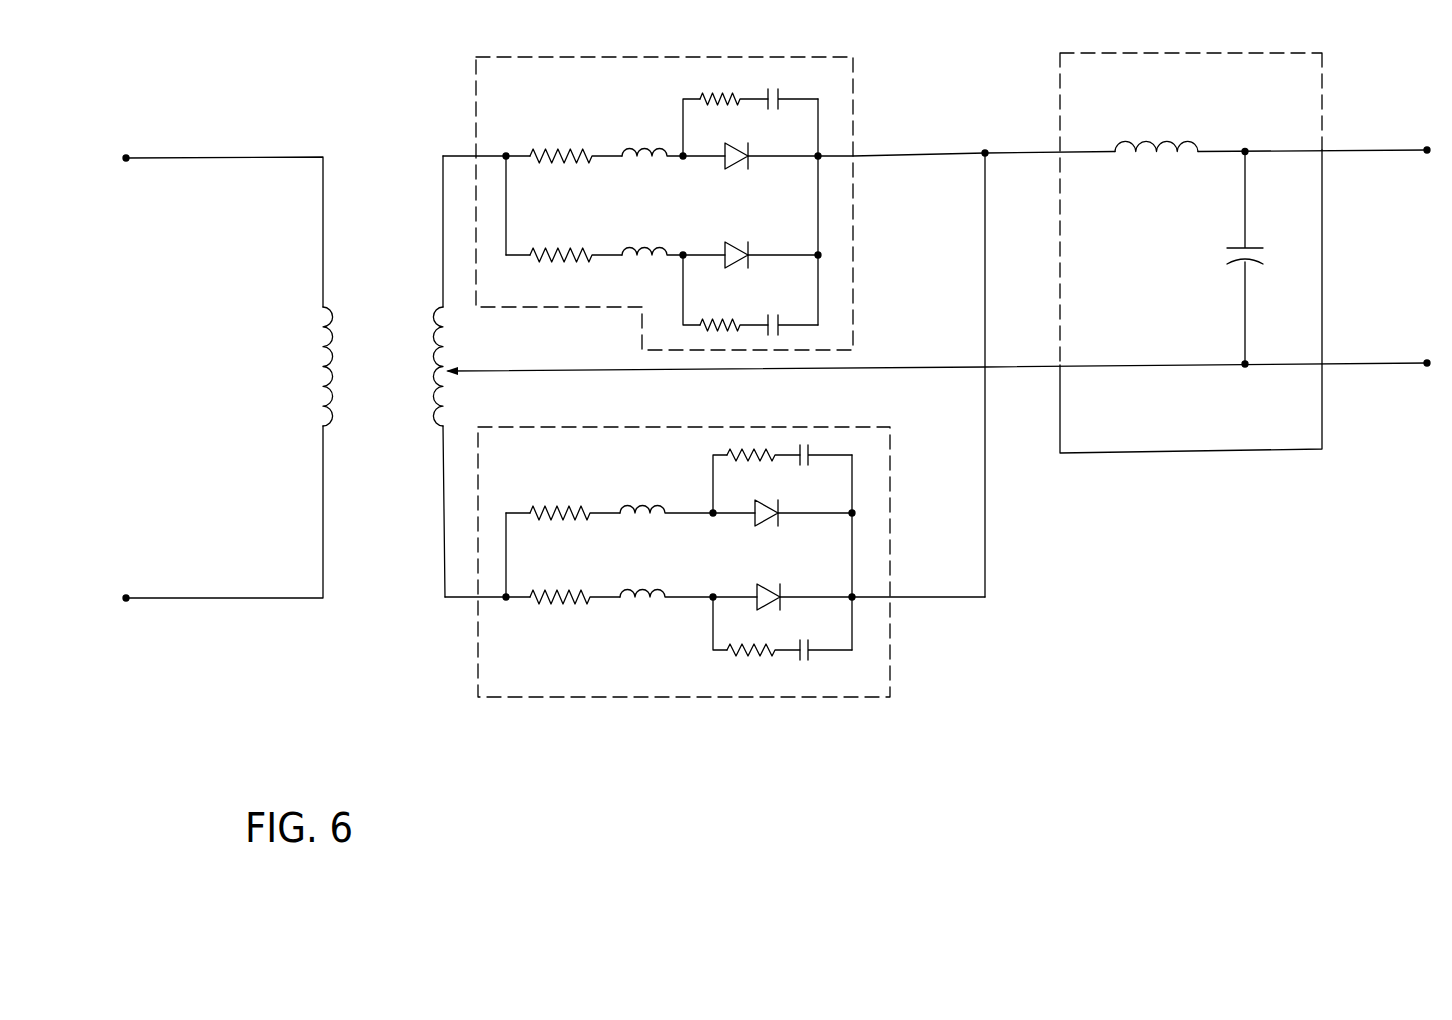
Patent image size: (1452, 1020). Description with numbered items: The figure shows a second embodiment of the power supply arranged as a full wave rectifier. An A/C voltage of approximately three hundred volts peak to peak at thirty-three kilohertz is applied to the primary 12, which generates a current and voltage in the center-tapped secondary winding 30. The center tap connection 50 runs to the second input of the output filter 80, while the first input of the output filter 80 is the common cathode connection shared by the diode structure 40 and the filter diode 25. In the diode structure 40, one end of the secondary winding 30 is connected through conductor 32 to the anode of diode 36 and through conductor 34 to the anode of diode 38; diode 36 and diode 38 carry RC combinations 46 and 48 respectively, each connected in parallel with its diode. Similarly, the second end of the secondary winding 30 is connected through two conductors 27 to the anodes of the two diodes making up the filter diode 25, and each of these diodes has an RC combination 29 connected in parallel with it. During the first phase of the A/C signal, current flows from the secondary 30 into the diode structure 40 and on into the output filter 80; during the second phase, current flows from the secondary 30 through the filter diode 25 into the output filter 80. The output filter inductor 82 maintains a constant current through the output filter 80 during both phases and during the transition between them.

The primary 12 is at (228, 378).
The secondary winding 30 is at (524, 376).
The center tap connection 50 is at (913, 368).
The diode structure 40 is at (714, 175).
The conductor 32 is at (603, 152).
The conductor 34 is at (610, 251).
The diode 36 is at (735, 165).
The diode 38 is at (741, 236).
The RC combination 46 is at (750, 104).
The RC combination 48 is at (748, 318).
The filter diode 25 is at (839, 594).
The conductors 27 is at (598, 516).
The RC combination 29 is at (973, 552).
The output filter 80 is at (1207, 300).
The output filter inductor 82 is at (1175, 142).